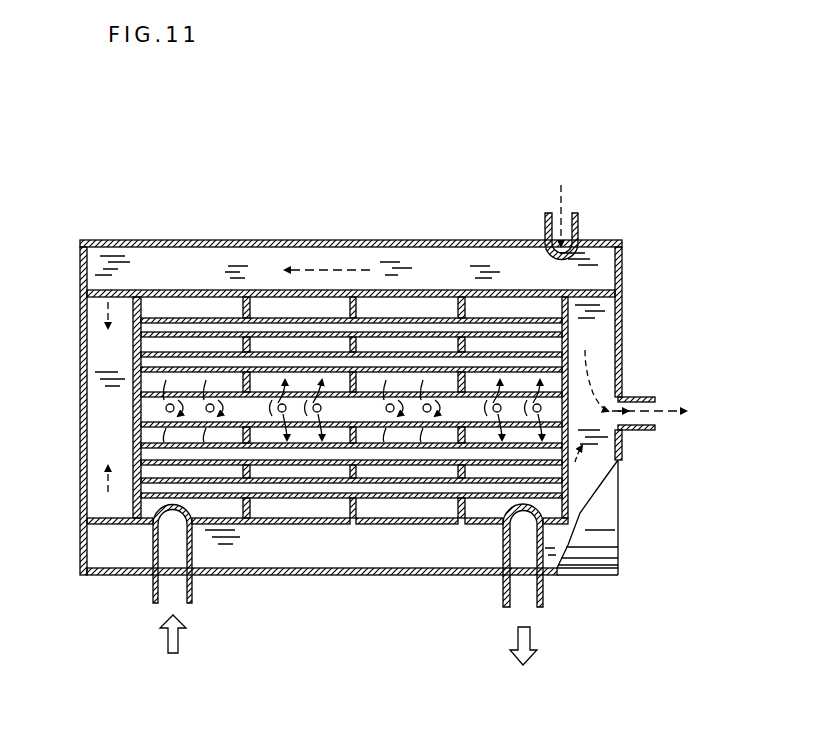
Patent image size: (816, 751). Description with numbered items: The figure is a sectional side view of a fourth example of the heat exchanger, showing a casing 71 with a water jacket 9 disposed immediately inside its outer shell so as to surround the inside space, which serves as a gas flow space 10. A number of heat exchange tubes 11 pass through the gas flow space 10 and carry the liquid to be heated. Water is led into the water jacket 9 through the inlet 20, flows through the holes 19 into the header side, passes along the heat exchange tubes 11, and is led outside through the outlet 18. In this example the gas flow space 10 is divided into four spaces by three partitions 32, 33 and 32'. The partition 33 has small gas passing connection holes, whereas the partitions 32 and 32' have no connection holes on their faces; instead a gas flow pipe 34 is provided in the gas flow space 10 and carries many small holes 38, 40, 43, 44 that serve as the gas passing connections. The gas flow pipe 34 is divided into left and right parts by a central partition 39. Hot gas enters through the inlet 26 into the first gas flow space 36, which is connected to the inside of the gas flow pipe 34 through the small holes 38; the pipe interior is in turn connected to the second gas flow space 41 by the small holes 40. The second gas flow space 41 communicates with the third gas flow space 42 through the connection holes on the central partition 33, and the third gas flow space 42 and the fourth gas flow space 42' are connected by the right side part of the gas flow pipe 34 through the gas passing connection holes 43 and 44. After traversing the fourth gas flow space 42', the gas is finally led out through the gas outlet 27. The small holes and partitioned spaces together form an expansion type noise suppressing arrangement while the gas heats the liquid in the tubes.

The water jacket 9 is at (430, 262).
The gas flow space 10 is at (208, 310).
The heat exchange tubes 11 is at (157, 318).
The outlet 18 is at (650, 397).
The holes 19 is at (108, 293).
The inlet 20 is at (578, 225).
The inlet 26 is at (153, 585).
The gas outlet 27 is at (543, 597).
The partition 32 is at (267, 355).
The partition 32' is at (496, 365).
The partition 33 is at (358, 303).
The gas flow pipe 34 is at (550, 395).
The first gas flow space 36 is at (150, 515).
The small holes 38 is at (167, 410).
The central partition 39 is at (385, 426).
The small holes 40 is at (315, 423).
The second gas flow space 41 is at (290, 510).
The third gas flow space 42 is at (460, 579).
The fourth gas flow space 42' is at (518, 577).
The gas passing connection holes 43 is at (427, 400).
The gas passing connection holes 44 is at (507, 415).
The casing 71 is at (83, 362).